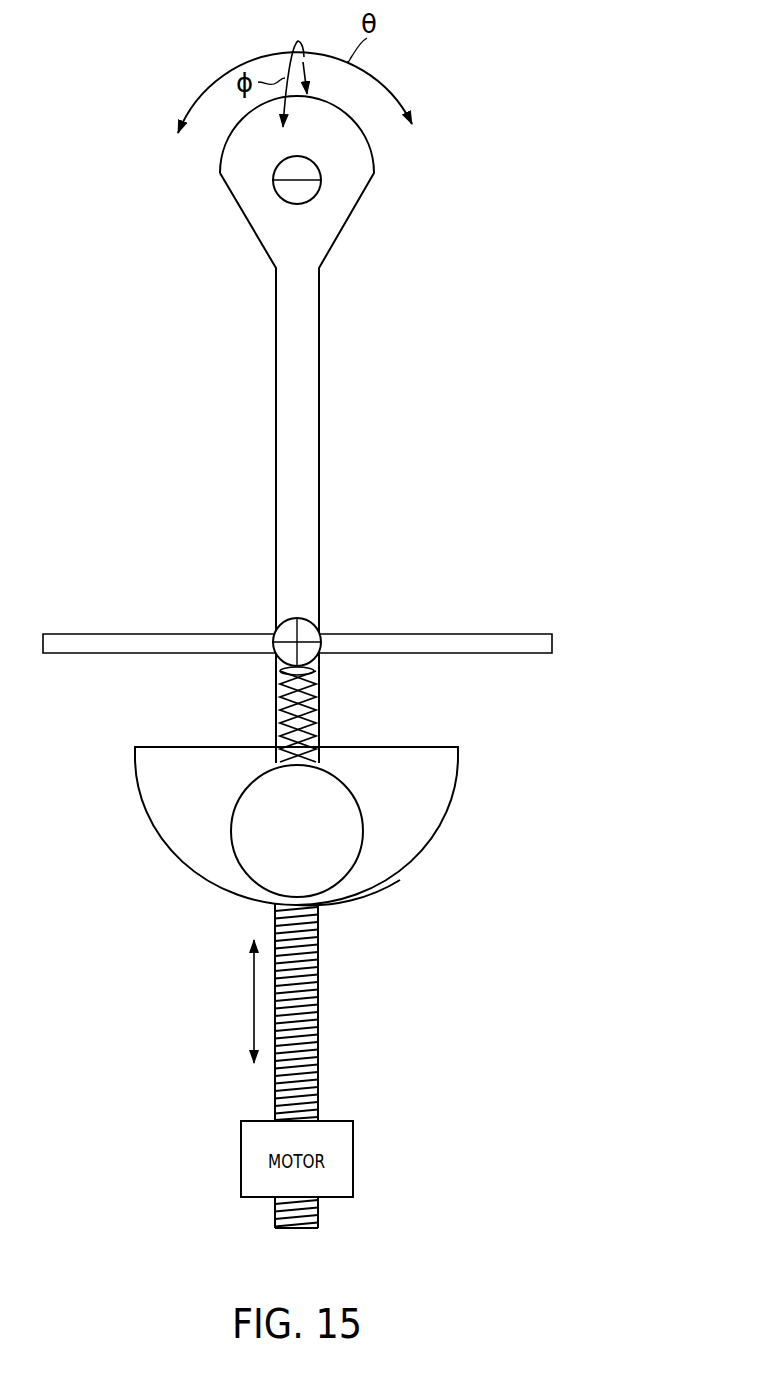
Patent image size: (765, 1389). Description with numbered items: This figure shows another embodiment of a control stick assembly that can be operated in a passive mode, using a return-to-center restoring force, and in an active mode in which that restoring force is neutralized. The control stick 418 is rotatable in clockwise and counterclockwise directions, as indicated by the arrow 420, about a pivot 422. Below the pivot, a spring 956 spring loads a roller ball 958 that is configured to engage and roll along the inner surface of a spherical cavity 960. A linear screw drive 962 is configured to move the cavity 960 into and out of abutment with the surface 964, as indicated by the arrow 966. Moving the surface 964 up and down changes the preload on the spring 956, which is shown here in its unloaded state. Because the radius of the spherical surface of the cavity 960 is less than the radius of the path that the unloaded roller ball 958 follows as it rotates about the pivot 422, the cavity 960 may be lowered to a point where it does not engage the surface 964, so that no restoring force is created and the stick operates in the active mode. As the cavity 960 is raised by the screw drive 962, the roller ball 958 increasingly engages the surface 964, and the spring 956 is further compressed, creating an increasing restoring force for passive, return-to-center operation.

The control stick 418 is at (281, 388).
The arrow 420 is at (371, 156).
The pivot 422 is at (288, 632).
The spring 956 is at (318, 705).
The roller ball 958 is at (255, 866).
The spherical cavity 960 is at (383, 862).
The linear screw drive 962 is at (347, 1061).
The surface 964 is at (356, 898).
The arrow 966 is at (252, 1008).